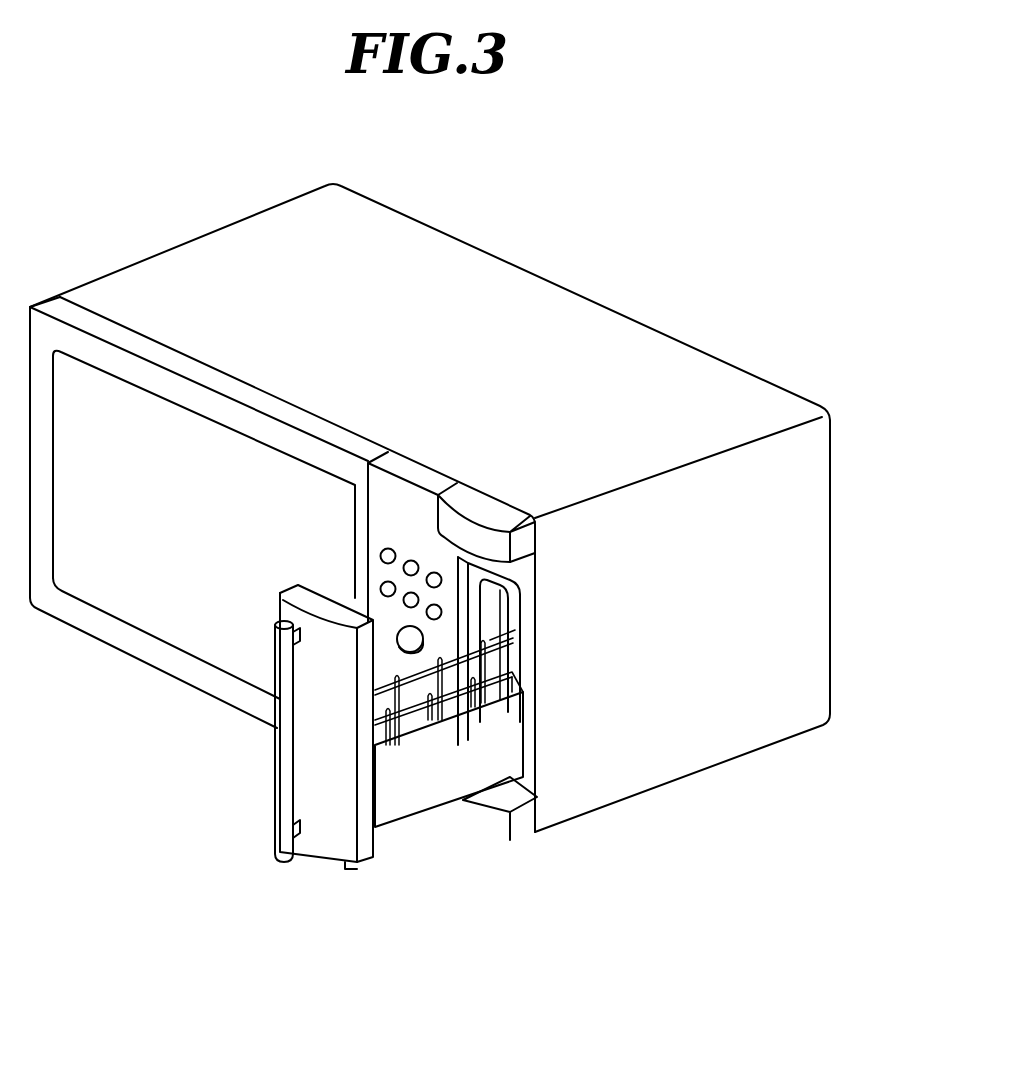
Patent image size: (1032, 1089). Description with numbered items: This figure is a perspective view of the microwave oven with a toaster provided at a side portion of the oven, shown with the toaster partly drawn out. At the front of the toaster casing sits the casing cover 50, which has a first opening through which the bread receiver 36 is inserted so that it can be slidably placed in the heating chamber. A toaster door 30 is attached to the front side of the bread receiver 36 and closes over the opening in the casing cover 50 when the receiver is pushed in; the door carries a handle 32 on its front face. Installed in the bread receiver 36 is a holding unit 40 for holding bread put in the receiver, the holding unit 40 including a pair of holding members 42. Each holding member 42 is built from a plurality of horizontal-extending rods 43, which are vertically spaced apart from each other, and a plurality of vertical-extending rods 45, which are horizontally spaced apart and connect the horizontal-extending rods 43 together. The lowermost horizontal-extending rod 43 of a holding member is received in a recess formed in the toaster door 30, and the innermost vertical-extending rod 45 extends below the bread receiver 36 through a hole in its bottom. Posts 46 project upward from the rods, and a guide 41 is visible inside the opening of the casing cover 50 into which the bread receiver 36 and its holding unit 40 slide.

The toaster door 30 is at (323, 847).
The handle 32 is at (280, 790).
The bread receiver 36 is at (426, 800).
The holding unit 40 is at (455, 705).
The guide groove 41 is at (505, 605).
The holding member 42 is at (497, 643).
The horizontal-extending rod 43 is at (495, 718).
The vertical-extending rod 45 is at (400, 750).
The support posts 46 is at (383, 755).
The casing cover 50 is at (530, 740).